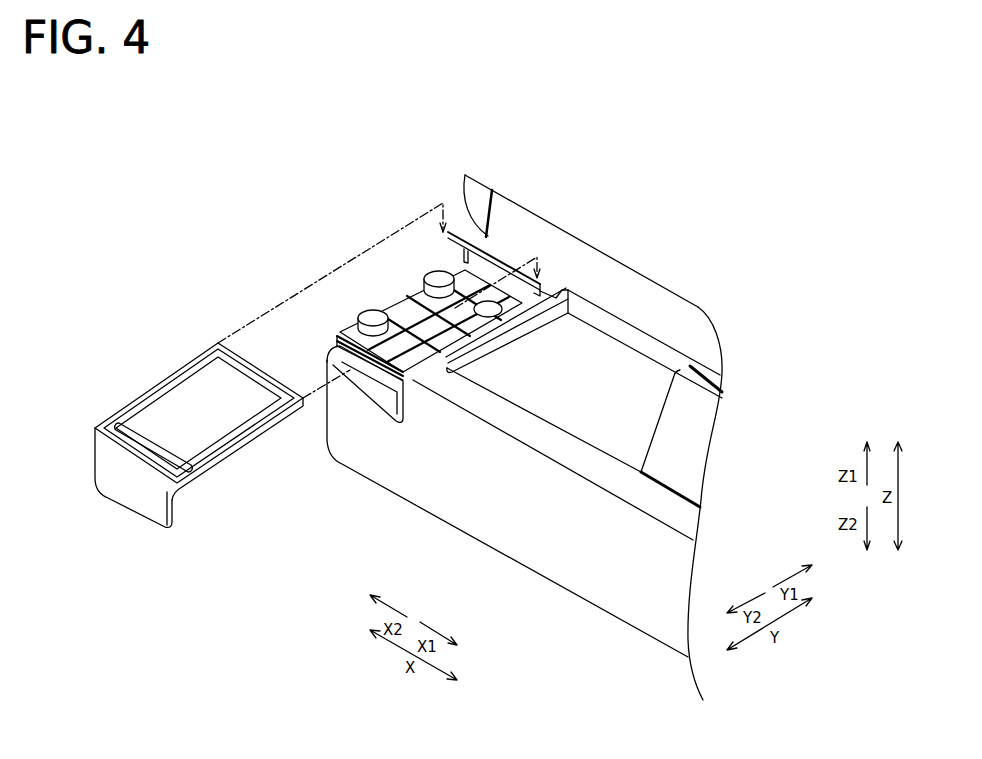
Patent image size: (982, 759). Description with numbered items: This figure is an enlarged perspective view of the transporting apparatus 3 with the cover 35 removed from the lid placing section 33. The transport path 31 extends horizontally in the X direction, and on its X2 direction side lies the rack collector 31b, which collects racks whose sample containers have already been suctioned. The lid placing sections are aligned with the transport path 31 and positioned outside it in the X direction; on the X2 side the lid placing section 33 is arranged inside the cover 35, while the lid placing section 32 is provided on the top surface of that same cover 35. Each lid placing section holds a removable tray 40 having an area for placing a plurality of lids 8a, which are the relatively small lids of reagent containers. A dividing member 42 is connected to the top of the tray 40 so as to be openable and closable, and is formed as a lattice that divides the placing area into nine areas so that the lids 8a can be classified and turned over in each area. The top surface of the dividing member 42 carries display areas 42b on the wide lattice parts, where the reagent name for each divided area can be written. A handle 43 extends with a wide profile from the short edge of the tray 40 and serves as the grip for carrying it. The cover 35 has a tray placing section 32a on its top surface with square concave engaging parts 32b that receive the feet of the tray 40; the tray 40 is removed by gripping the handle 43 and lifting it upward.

The transporting apparatus 3 is at (692, 455).
The lid 8a is at (437, 269).
The transport path 31 is at (600, 352).
The rack collector 31b is at (567, 418).
The lid placing section 32 is at (158, 368).
The tray placing section 32a is at (212, 408).
The engaging part 32b is at (152, 400).
The lid placing section 33 is at (385, 297).
The cover 35 is at (140, 497).
The tray 40 is at (333, 327).
The dividing member 42 is at (457, 320).
The display area 42b is at (355, 315).
The handle 43 is at (365, 375).